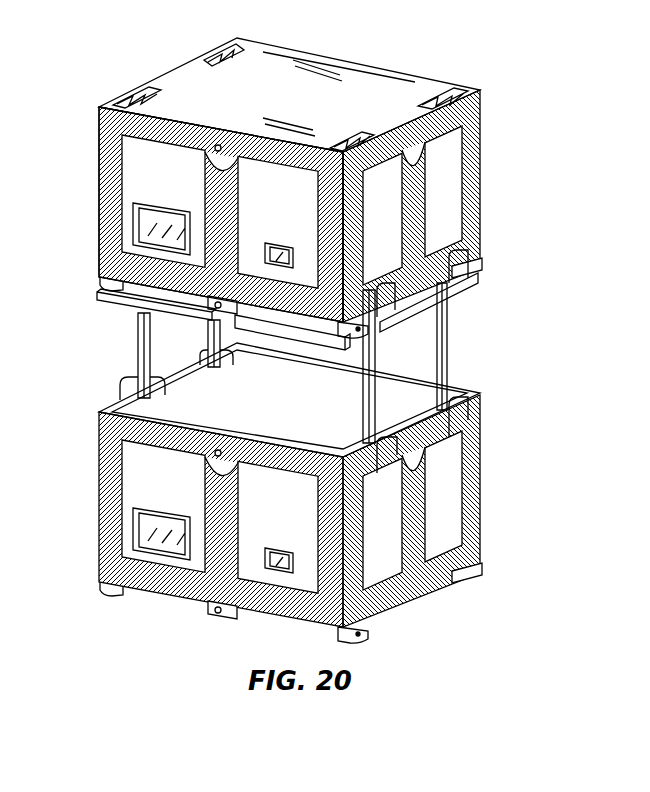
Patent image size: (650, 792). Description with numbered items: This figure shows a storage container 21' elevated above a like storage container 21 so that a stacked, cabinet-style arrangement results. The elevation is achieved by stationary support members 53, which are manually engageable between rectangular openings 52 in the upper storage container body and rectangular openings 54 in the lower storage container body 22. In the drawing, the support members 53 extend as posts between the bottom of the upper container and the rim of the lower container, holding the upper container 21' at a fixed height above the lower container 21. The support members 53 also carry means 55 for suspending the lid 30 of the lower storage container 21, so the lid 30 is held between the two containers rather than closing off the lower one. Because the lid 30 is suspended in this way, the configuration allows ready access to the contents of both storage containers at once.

The storage container 21 is at (319, 493).
The storage container 21' is at (268, 177).
The storage container body 22 is at (87, 180).
The lid 30 is at (342, 342).
The rectangular openings 52 is at (101, 298).
The stationary support members 53 is at (138, 360).
The rectangular openings 54 is at (182, 358).
The means for suspending the lid 55 is at (447, 305).